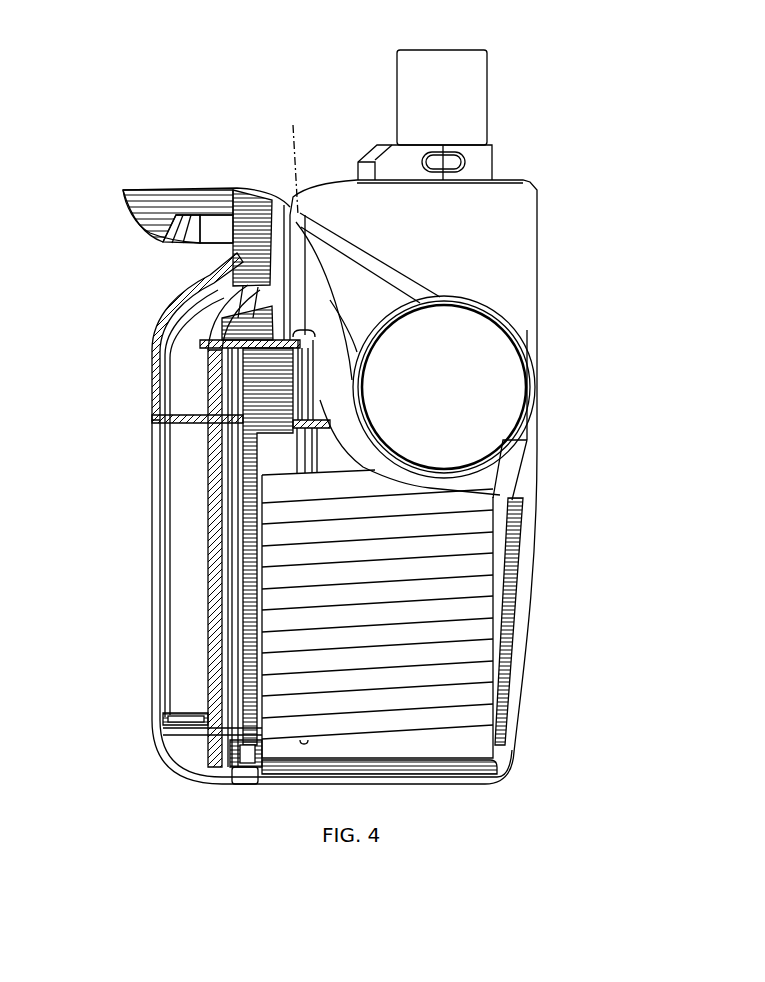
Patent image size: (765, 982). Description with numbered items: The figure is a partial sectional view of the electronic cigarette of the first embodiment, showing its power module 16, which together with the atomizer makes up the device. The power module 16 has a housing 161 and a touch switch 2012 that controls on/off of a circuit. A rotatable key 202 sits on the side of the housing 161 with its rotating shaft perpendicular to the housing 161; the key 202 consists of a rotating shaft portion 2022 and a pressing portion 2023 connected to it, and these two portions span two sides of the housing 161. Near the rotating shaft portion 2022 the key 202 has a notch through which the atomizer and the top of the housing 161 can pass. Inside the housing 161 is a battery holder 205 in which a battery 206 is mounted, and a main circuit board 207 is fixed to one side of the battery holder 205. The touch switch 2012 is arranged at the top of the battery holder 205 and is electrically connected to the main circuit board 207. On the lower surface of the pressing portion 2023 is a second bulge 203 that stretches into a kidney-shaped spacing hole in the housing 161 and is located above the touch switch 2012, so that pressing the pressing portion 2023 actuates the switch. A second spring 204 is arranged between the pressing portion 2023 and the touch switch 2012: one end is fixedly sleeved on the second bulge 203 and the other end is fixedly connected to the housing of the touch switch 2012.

The power module 16 is at (538, 585).
The housing 161 is at (152, 514).
The key 202 is at (428, 268).
The touch switch 2012 is at (212, 340).
The rotating shaft portion 2022 is at (448, 368).
The pressing portion 2023 is at (132, 213).
The second bulge 203 is at (232, 252).
The second spring 204 is at (232, 303).
The battery holder 205 is at (258, 623).
The battery 206 is at (292, 708).
The main circuit board 207 is at (220, 582).